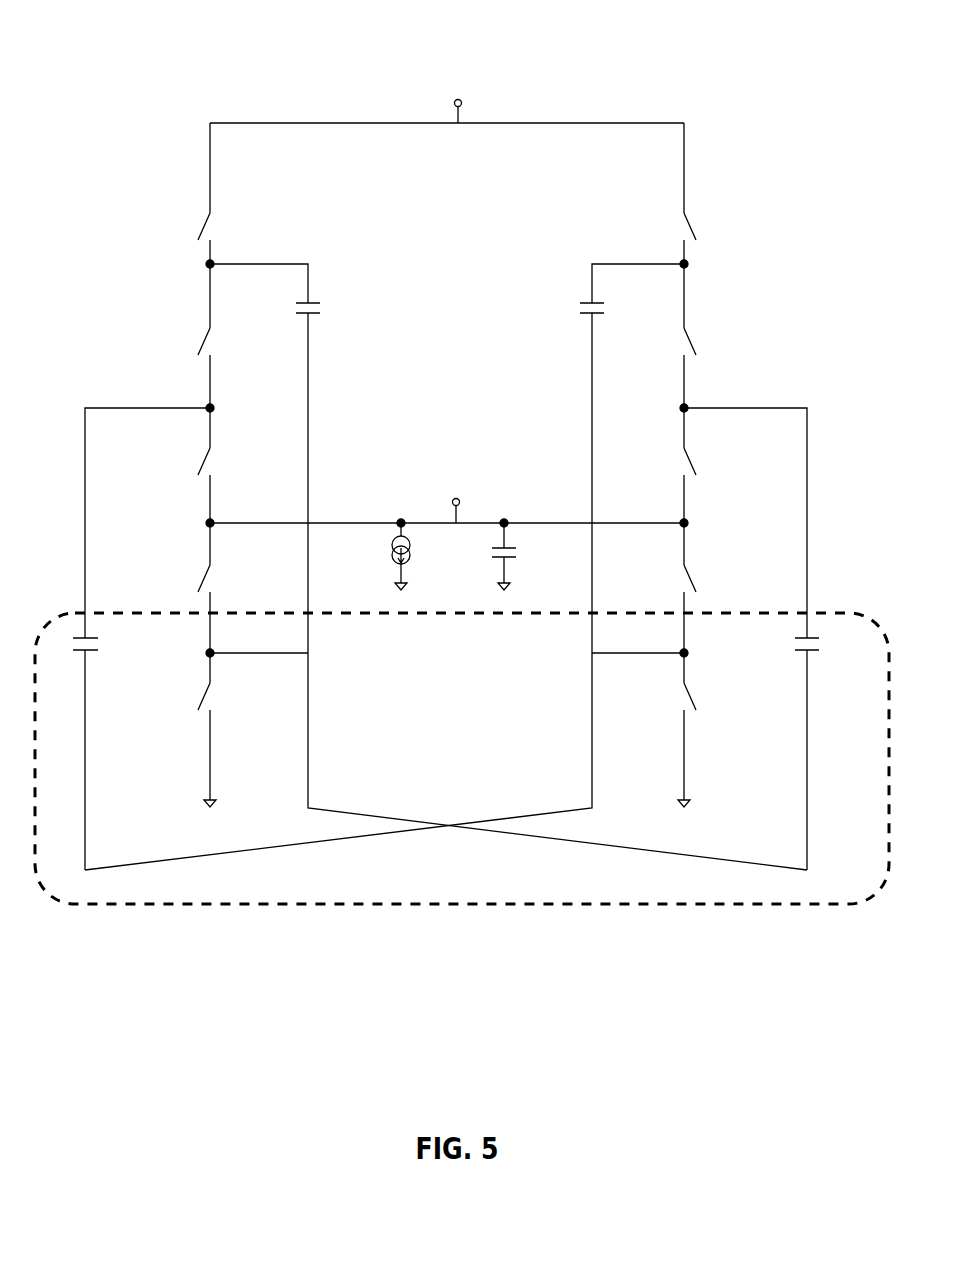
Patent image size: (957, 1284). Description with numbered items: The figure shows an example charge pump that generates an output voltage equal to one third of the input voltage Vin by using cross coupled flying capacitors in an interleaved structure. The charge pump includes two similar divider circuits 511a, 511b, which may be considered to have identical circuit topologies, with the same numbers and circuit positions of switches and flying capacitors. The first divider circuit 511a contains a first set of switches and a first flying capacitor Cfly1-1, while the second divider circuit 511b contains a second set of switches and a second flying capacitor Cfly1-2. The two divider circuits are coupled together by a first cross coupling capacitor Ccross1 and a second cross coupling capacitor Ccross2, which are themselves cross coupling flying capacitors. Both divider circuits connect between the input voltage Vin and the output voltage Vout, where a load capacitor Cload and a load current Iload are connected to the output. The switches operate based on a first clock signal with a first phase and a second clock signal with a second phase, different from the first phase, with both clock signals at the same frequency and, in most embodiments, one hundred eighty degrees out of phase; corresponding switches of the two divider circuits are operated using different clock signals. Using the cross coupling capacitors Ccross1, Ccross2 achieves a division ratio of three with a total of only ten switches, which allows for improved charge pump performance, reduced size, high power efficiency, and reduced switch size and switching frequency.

The divider circuit 511a is at (179, 96).
The divider circuit 511b is at (687, 96).
The input voltage Vin is at (457, 104).
The output voltage Vout is at (456, 503).
The load current Iload is at (414, 554).
The load capacitor Cload is at (517, 554).
The first flying capacitor Cfly1-1 is at (508, 567).
The second flying capacitor Cfly1-2 is at (384, 567).
The first cross coupling capacitor Ccross1 is at (141, 639).
The second cross coupling capacitor Ccross2 is at (774, 639).